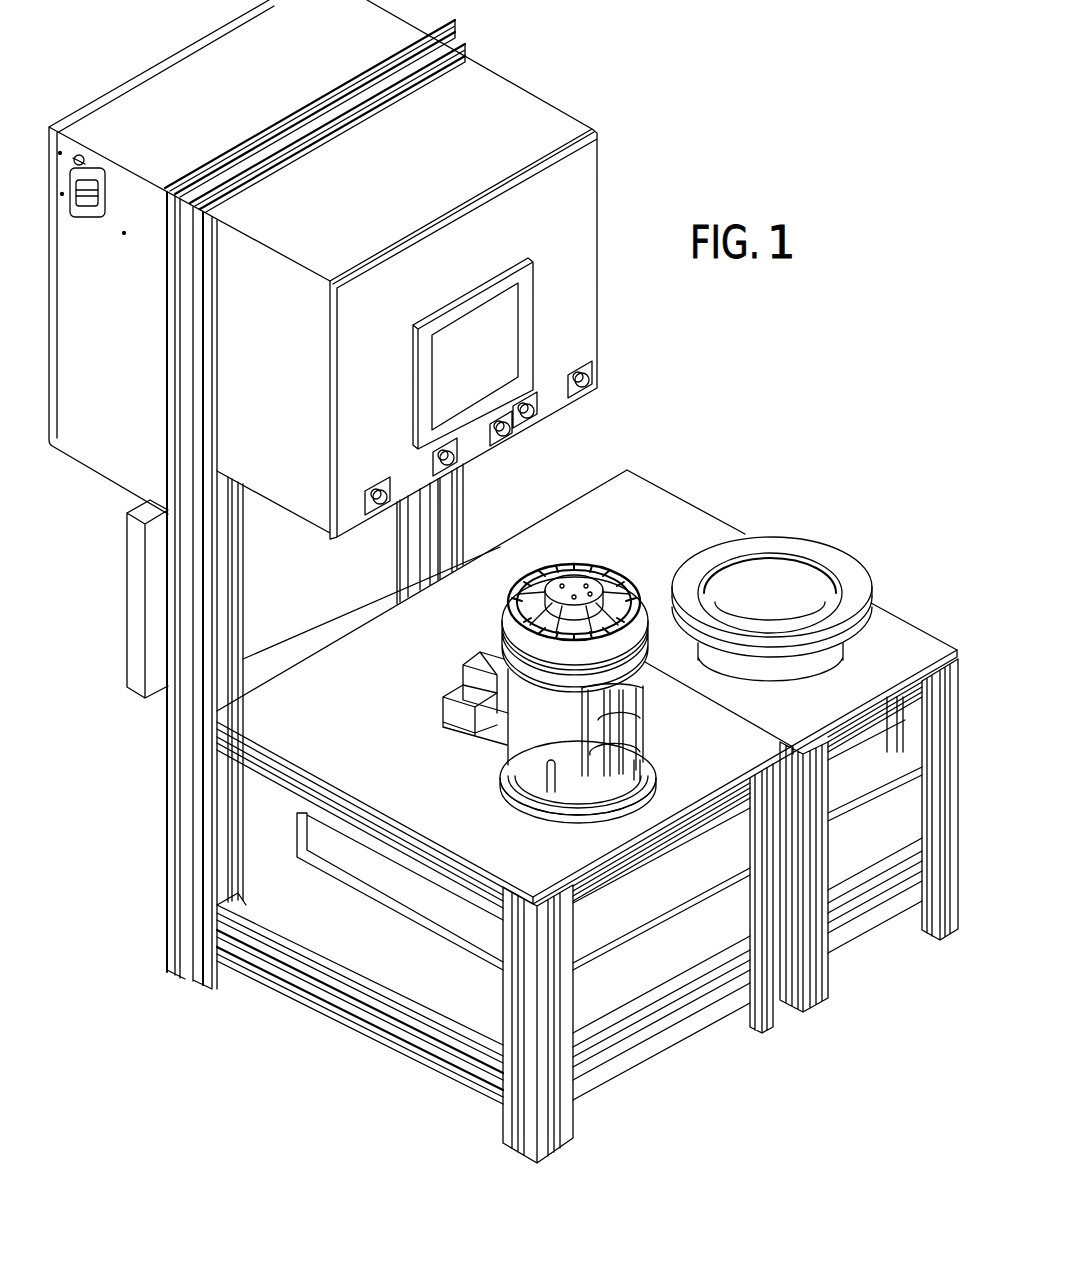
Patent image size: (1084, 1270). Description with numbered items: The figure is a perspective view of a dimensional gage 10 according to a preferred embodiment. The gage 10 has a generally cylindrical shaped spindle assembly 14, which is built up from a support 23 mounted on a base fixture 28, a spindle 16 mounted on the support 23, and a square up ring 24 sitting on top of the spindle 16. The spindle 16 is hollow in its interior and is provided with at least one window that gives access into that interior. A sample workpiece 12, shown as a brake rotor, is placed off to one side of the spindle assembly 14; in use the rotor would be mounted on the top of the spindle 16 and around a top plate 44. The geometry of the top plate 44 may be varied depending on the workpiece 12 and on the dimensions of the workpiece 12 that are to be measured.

The dimensional gage 10 is at (140, 731).
The sample workpiece 12 is at (768, 545).
The spindle assembly 14 is at (532, 753).
The spindle 16 is at (522, 698).
The support 23 is at (590, 797).
The square up ring 24 is at (620, 648).
The base fixture 28 is at (650, 853).
The top plate 44 is at (568, 582).